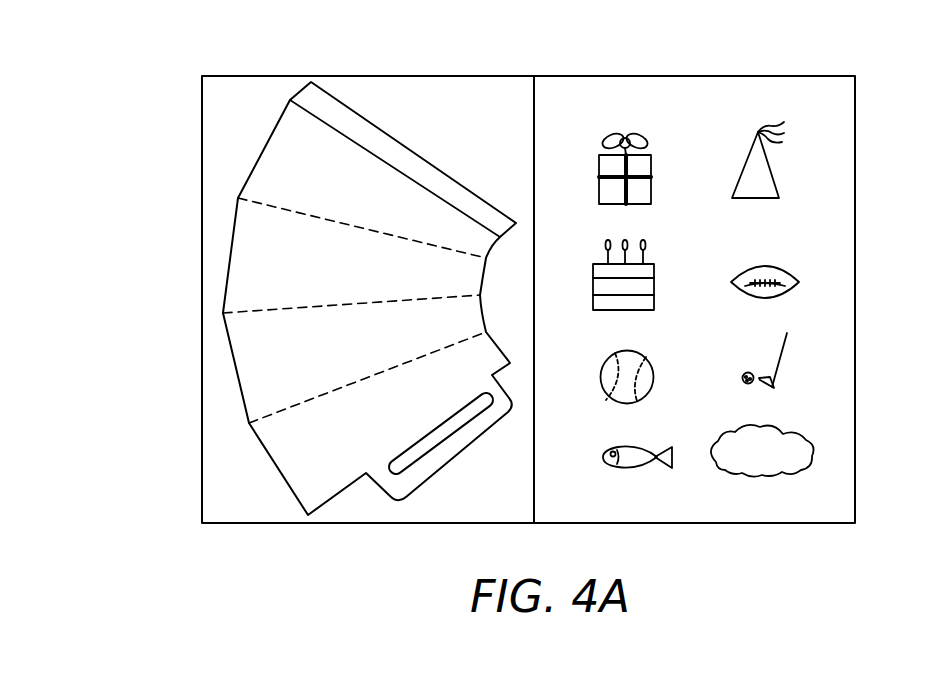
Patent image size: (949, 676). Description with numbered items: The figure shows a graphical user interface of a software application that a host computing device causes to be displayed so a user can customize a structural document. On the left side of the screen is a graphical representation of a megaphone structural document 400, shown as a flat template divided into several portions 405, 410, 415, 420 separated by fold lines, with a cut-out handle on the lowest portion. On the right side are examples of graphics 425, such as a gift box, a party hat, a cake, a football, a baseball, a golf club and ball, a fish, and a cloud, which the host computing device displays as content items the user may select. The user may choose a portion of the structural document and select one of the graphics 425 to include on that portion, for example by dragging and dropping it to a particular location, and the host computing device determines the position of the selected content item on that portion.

The megaphone structural document 400 is at (347, 76).
The portion of the megaphone structural document 405 is at (260, 153).
The portion of the megaphone structural document 410 is at (230, 238).
The portion of the megaphone structural document 415 is at (235, 367).
The portion of the megaphone structural document 420 is at (282, 477).
The graphics 425 is at (872, 128).